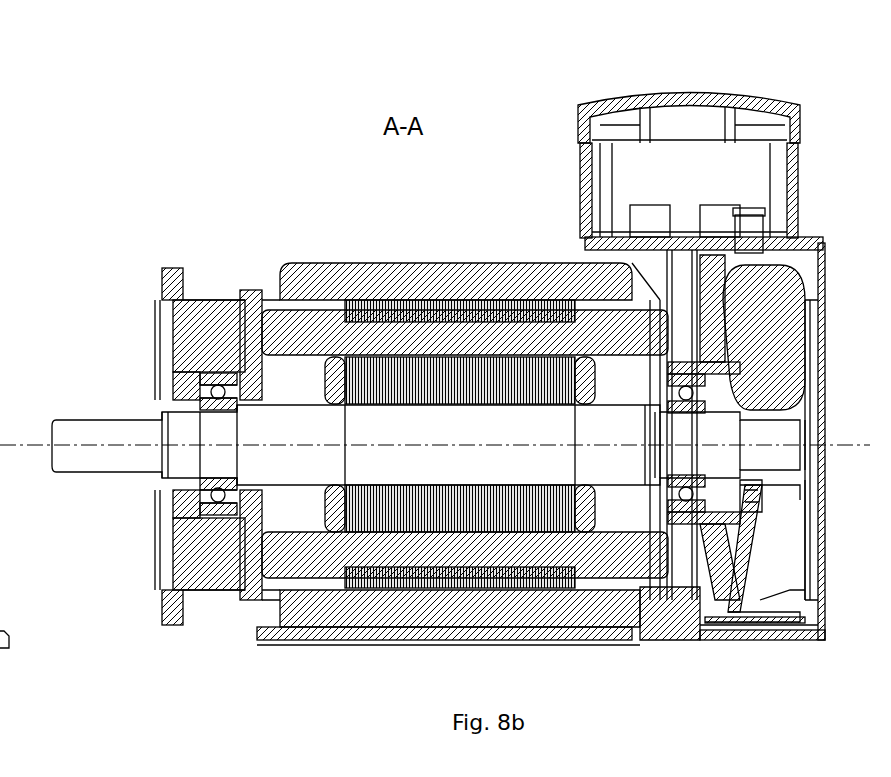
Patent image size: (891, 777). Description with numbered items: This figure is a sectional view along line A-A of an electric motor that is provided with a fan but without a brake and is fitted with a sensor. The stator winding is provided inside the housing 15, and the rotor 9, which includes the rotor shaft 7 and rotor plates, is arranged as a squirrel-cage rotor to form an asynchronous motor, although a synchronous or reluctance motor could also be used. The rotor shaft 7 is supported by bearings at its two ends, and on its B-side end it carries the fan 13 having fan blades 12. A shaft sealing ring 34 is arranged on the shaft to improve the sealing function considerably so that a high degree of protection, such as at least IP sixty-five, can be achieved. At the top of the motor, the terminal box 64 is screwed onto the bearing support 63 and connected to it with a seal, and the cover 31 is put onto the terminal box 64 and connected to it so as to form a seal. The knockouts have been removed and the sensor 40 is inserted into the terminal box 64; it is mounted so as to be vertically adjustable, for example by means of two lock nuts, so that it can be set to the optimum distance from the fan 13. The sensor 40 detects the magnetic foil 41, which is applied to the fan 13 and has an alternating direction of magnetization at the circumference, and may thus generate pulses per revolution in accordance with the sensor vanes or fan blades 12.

The rotor shaft 7 is at (275, 462).
The rotor 9 is at (303, 338).
The housing 15 is at (440, 265).
The terminal box 64 is at (572, 190).
The cover 31 is at (690, 118).
The sensor 40 is at (755, 232).
The fan blades 12 is at (818, 287).
The shaft sealing ring 34 is at (753, 490).
The fan 13 is at (747, 500).
The bearing support 63 is at (673, 613).
The magnetic foil 41 is at (757, 620).